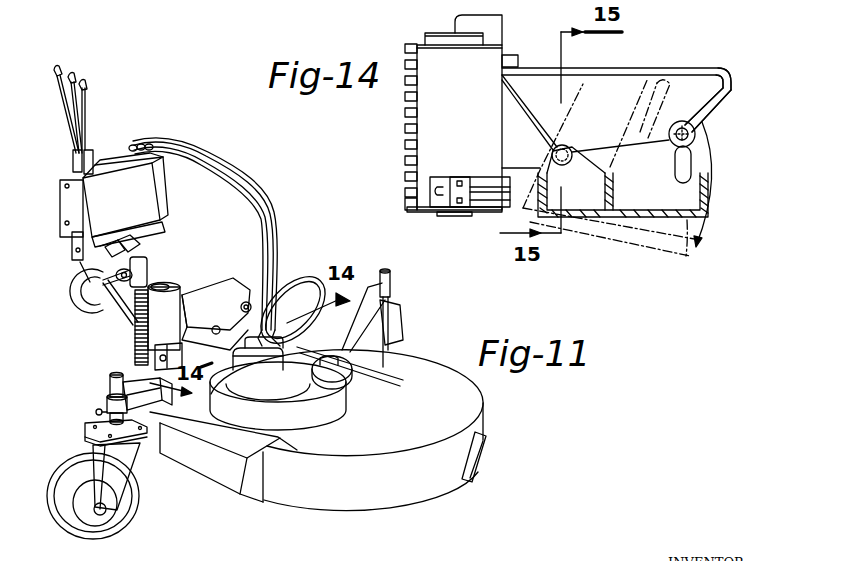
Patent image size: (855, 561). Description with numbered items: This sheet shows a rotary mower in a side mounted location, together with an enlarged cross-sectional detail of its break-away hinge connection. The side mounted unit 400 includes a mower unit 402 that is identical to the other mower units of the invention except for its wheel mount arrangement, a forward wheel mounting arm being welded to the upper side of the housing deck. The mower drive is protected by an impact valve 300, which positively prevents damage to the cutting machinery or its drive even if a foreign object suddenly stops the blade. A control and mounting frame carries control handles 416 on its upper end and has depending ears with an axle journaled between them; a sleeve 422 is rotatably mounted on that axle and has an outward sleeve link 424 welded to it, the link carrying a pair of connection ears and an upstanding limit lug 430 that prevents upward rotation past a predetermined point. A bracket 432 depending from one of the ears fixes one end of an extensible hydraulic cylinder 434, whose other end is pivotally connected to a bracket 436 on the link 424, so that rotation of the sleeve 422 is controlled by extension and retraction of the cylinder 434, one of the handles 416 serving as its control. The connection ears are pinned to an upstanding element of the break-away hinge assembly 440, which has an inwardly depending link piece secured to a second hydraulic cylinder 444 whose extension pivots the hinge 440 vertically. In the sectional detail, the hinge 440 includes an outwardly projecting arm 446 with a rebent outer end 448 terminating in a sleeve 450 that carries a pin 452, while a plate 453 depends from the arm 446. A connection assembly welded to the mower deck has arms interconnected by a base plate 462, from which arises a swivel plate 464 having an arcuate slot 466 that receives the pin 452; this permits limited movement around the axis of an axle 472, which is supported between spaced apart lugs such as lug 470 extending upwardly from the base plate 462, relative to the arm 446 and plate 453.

In FIG. 11, the impact valve 300 is at (297, 310).
In FIG. 11, the side mounted unit 400 is at (491, 410).
In FIG. 11, the mower unit 402 is at (417, 495).
In FIG. 11, the control handles 416 is at (90, 80).
In FIG. 11, the sleeve 422 is at (98, 240).
In FIG. 11, the sleeve link 424 is at (115, 243).
In FIG. 11, the limit lug 430 is at (132, 248).
In FIG. 11, the bracket 432 is at (78, 268).
In FIG. 11, the extensible hydraulic cylinder 434 is at (97, 292).
In FIG. 11, the bracket 436 is at (137, 277).
In FIG. 14, the break-away hinge assembly 440 is at (404, 139).
In FIG. 11, the break-away hinge assembly 440 is at (134, 333).
In FIG. 11, the second hydraulic cylinder 444 is at (123, 300).
In FIG. 14, the outwardly projecting arm 446 is at (640, 68).
In FIG. 11, the outwardly projecting arm 446 is at (238, 277).
In FIG. 14, the rebent outer end 448 is at (714, 104).
In FIG. 14, the sleeve 450 is at (696, 141).
In FIG. 14, the pin 452 is at (690, 118).
In FIG. 11, the pin 452 is at (272, 287).
In FIG. 14, the plate 453 is at (533, 80).
In FIG. 11, the plate 453 is at (228, 311).
In FIG. 14, the base plate 462 is at (652, 218).
In FIG. 14, the swivel plate 464 is at (708, 164).
In FIG. 14, the arcuate slot 466 is at (676, 162).
In FIG. 14, the lug 470 is at (575, 173).
In FIG. 14, the axle 472 is at (565, 146).
In FIG. 11, the axle 472 is at (198, 309).